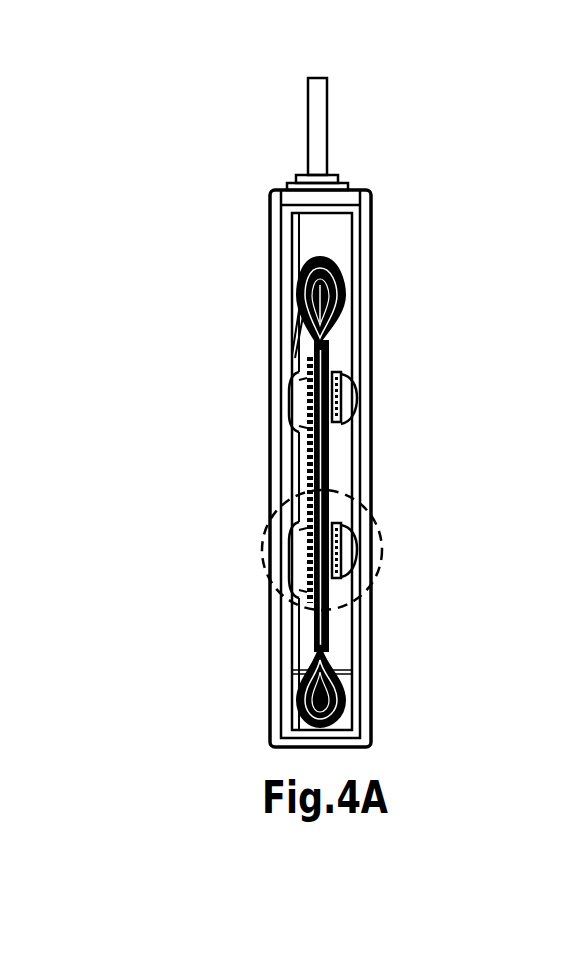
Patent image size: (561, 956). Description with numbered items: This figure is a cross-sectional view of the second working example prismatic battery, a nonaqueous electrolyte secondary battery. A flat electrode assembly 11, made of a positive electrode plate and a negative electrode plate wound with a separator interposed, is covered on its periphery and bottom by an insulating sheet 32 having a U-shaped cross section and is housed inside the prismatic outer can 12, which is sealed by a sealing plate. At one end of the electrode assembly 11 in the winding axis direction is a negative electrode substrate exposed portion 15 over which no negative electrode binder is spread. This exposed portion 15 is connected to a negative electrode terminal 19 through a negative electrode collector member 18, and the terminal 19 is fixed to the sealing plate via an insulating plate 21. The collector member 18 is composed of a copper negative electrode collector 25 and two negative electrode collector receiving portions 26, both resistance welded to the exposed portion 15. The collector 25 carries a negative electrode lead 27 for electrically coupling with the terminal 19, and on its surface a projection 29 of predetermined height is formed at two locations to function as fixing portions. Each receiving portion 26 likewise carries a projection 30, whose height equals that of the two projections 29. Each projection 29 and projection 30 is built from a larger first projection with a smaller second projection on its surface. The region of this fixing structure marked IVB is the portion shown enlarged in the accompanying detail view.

The flat electrode assembly 11 is at (340, 455).
The outer can 12 is at (371, 632).
The negative electrode substrate exposed portion 15 is at (318, 634).
The negative electrode collector member 18 is at (308, 462).
The negative electrode terminal 19 is at (318, 108).
The insulating plate 21 is at (296, 188).
The negative electrode collector 25 is at (306, 400).
The negative electrode collector receiving portion 26 is at (354, 397).
The negative electrode lead 27 is at (290, 252).
The projection 29 is at (290, 386).
The projection 30 is at (352, 381).
The insulating sheet 32 is at (310, 706).
The portion IVB is at (402, 592).